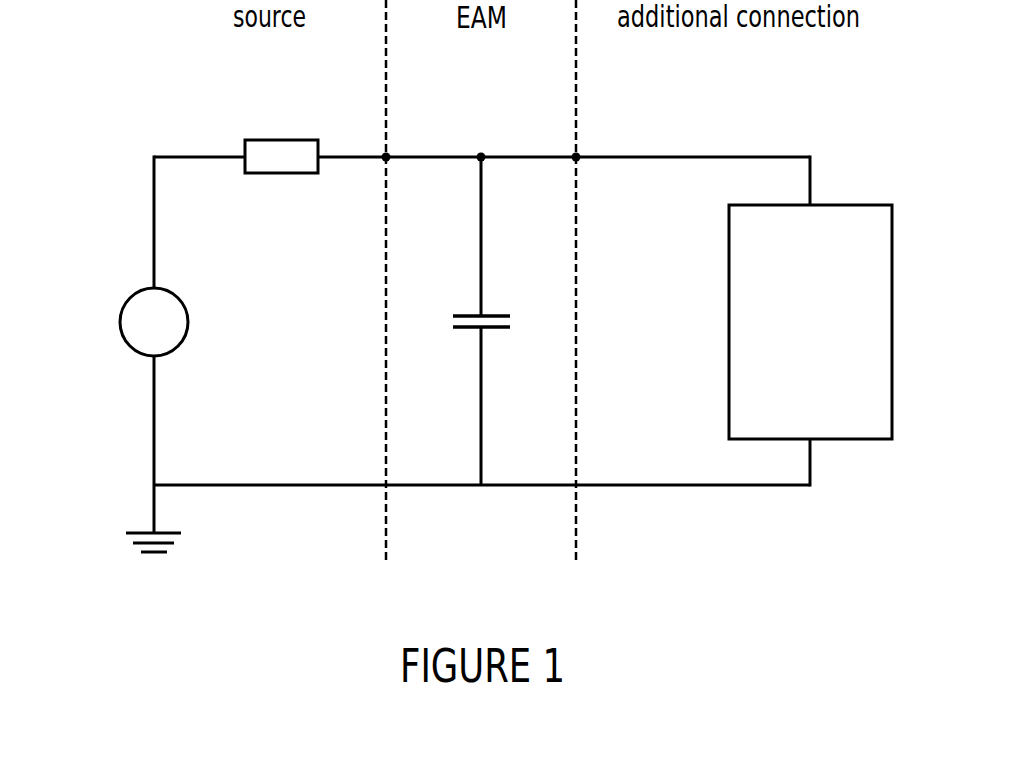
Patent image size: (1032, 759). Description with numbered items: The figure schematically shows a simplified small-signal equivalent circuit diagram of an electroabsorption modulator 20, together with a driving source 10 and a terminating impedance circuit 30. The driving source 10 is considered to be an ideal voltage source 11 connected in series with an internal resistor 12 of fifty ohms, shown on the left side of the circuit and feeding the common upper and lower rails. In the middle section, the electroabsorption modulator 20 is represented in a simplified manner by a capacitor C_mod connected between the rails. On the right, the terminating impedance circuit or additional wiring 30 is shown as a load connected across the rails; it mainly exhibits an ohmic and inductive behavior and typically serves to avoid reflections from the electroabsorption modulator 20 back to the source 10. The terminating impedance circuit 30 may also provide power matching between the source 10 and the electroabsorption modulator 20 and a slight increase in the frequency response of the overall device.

The driving source 10 is at (386, 570).
The ideal voltage source 11 is at (120, 320).
The internal resistor 12 is at (285, 140).
The electroabsorption modulator 20 is at (574, 569).
The terminating impedance circuit 30 is at (898, 569).